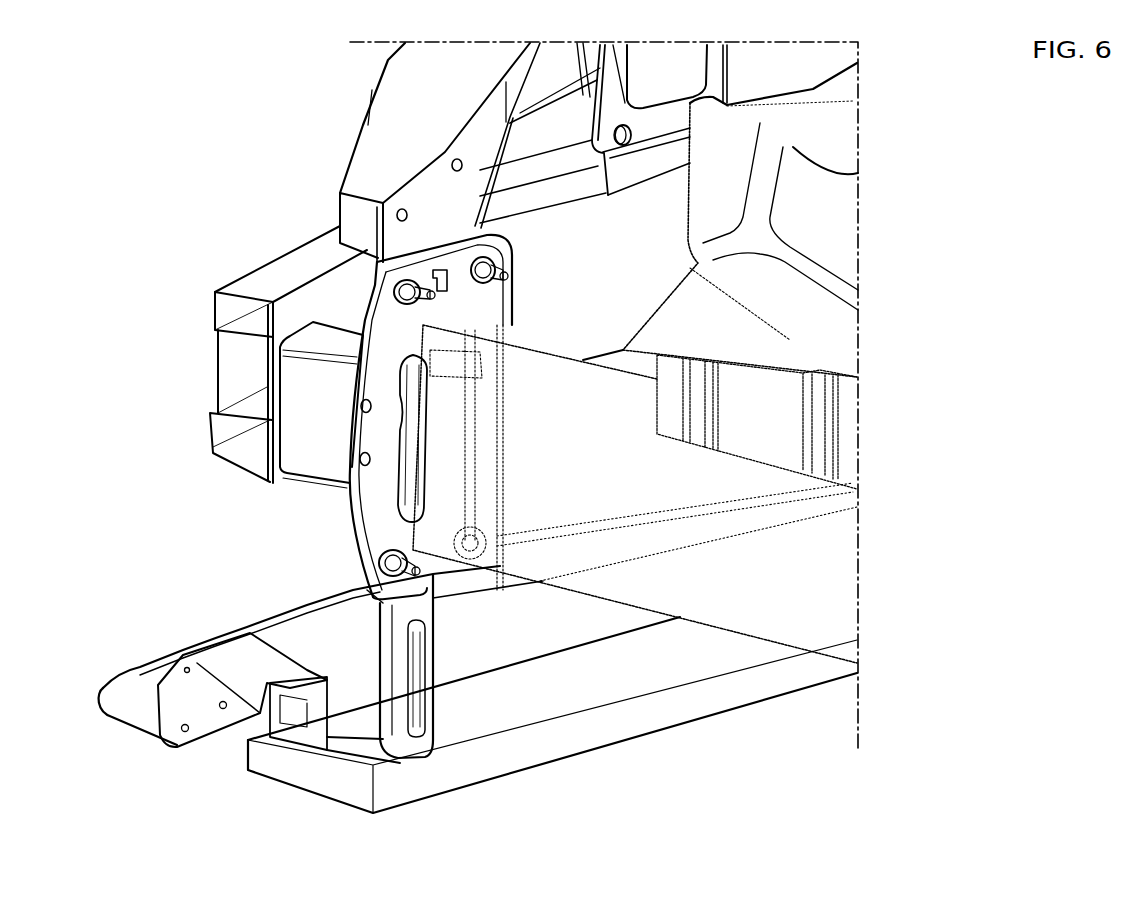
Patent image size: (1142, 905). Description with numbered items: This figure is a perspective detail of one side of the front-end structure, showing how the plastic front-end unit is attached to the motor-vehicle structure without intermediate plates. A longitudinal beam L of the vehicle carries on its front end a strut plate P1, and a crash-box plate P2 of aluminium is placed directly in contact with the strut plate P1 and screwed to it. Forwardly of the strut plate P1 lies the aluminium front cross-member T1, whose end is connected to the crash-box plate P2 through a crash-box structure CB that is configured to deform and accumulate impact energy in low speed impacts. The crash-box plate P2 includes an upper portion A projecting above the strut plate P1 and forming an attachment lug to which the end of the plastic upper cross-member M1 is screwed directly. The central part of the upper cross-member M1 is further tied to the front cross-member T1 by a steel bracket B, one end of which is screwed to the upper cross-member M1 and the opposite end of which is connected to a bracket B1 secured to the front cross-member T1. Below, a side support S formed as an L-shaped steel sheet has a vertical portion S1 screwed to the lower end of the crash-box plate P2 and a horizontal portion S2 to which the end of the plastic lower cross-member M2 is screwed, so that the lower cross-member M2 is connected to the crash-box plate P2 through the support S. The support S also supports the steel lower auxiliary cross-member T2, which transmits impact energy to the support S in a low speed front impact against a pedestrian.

The upper cross-member M1 is at (362, 122).
The front cross-member T1 is at (257, 263).
The crash-box plate P2 is at (367, 260).
The upper portion A is at (450, 205).
The bracket B is at (730, 62).
The bracket B1 is at (600, 187).
The crash-box structure CB is at (317, 462).
The strut plate P1 is at (358, 532).
The lower auxiliary cross-member T2 is at (140, 660).
The vertical portion S1 is at (428, 655).
The side support S is at (437, 714).
The longitudinal beam L is at (606, 603).
The lower cross-member M2 is at (540, 773).
The horizontal portion S2 is at (317, 753).